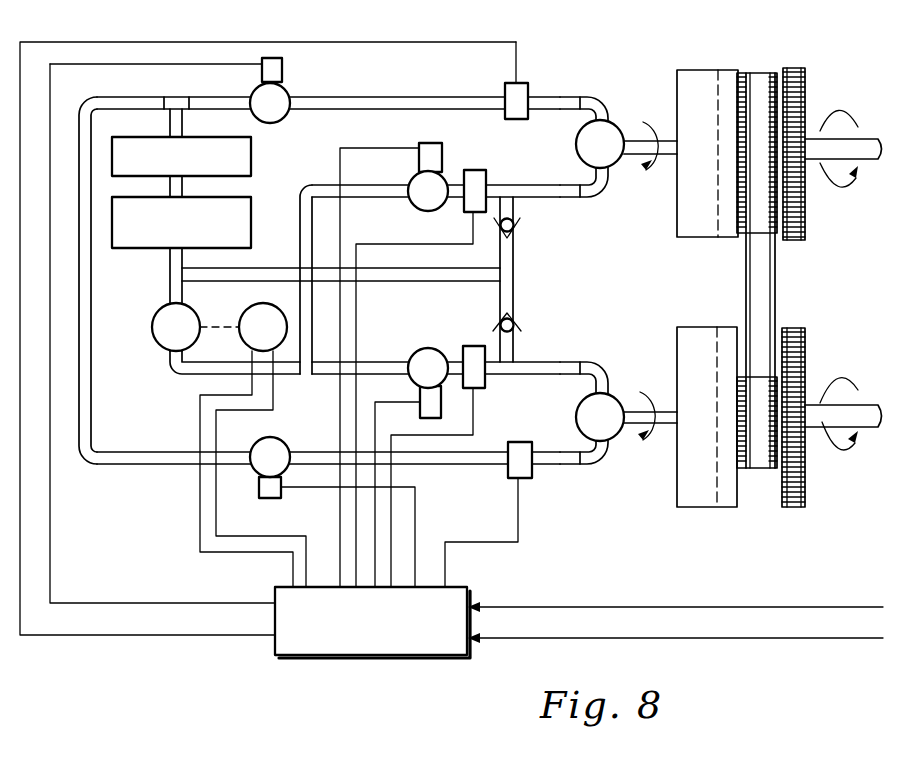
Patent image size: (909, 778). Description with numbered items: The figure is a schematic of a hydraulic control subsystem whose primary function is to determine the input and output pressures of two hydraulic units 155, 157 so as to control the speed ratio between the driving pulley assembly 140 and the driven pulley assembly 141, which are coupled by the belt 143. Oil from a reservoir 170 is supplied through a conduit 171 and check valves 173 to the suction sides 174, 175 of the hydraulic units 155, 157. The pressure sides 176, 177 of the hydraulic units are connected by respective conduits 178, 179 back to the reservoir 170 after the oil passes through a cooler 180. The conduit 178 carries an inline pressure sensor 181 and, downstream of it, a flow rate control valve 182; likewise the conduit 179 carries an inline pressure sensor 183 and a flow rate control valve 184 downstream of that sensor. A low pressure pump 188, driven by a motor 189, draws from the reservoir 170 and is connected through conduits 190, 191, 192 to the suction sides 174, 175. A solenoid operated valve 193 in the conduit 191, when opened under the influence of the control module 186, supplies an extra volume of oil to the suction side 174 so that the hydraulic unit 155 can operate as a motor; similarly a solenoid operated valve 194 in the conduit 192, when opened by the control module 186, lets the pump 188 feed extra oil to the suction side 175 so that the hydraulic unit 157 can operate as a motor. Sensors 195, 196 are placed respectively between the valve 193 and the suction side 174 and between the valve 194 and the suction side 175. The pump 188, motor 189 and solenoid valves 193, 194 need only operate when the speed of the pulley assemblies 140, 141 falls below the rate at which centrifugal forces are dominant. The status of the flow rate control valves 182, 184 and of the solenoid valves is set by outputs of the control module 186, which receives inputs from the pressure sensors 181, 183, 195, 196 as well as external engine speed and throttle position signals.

The driving pulley assembly 140 is at (808, 52).
The driven pulley assembly 141 is at (822, 473).
The belt 143 is at (778, 286).
The hydraulic unit 155 is at (576, 140).
The hydraulic unit 157 is at (612, 393).
The reservoir 170 is at (252, 200).
The conduit 171 is at (412, 282).
The check valve 173 is at (522, 228).
The suction side 174 is at (608, 176).
The suction side 175 is at (604, 350).
The pressure side 176 is at (610, 118).
The pressure side 177 is at (590, 466).
The conduit 178 is at (432, 78).
The conduit 179 is at (446, 465).
The cooler 180 is at (252, 143).
The pressure sensor 181 is at (530, 84).
The flow rate control valve 182 is at (286, 92).
The pressure sensor 183 is at (526, 480).
The flow rate control valve 184 is at (282, 436).
The control module 186 is at (274, 596).
The low pressure pump 188 is at (154, 320).
The motor 189 is at (248, 304).
The conduit 190 is at (202, 376).
The conduit 191 is at (364, 198).
The conduit 192 is at (374, 362).
The solenoid operated valve 193 is at (414, 208).
The solenoid operated valve 194 is at (428, 348).
The sensor 195 is at (487, 174).
The sensor 196 is at (486, 384).